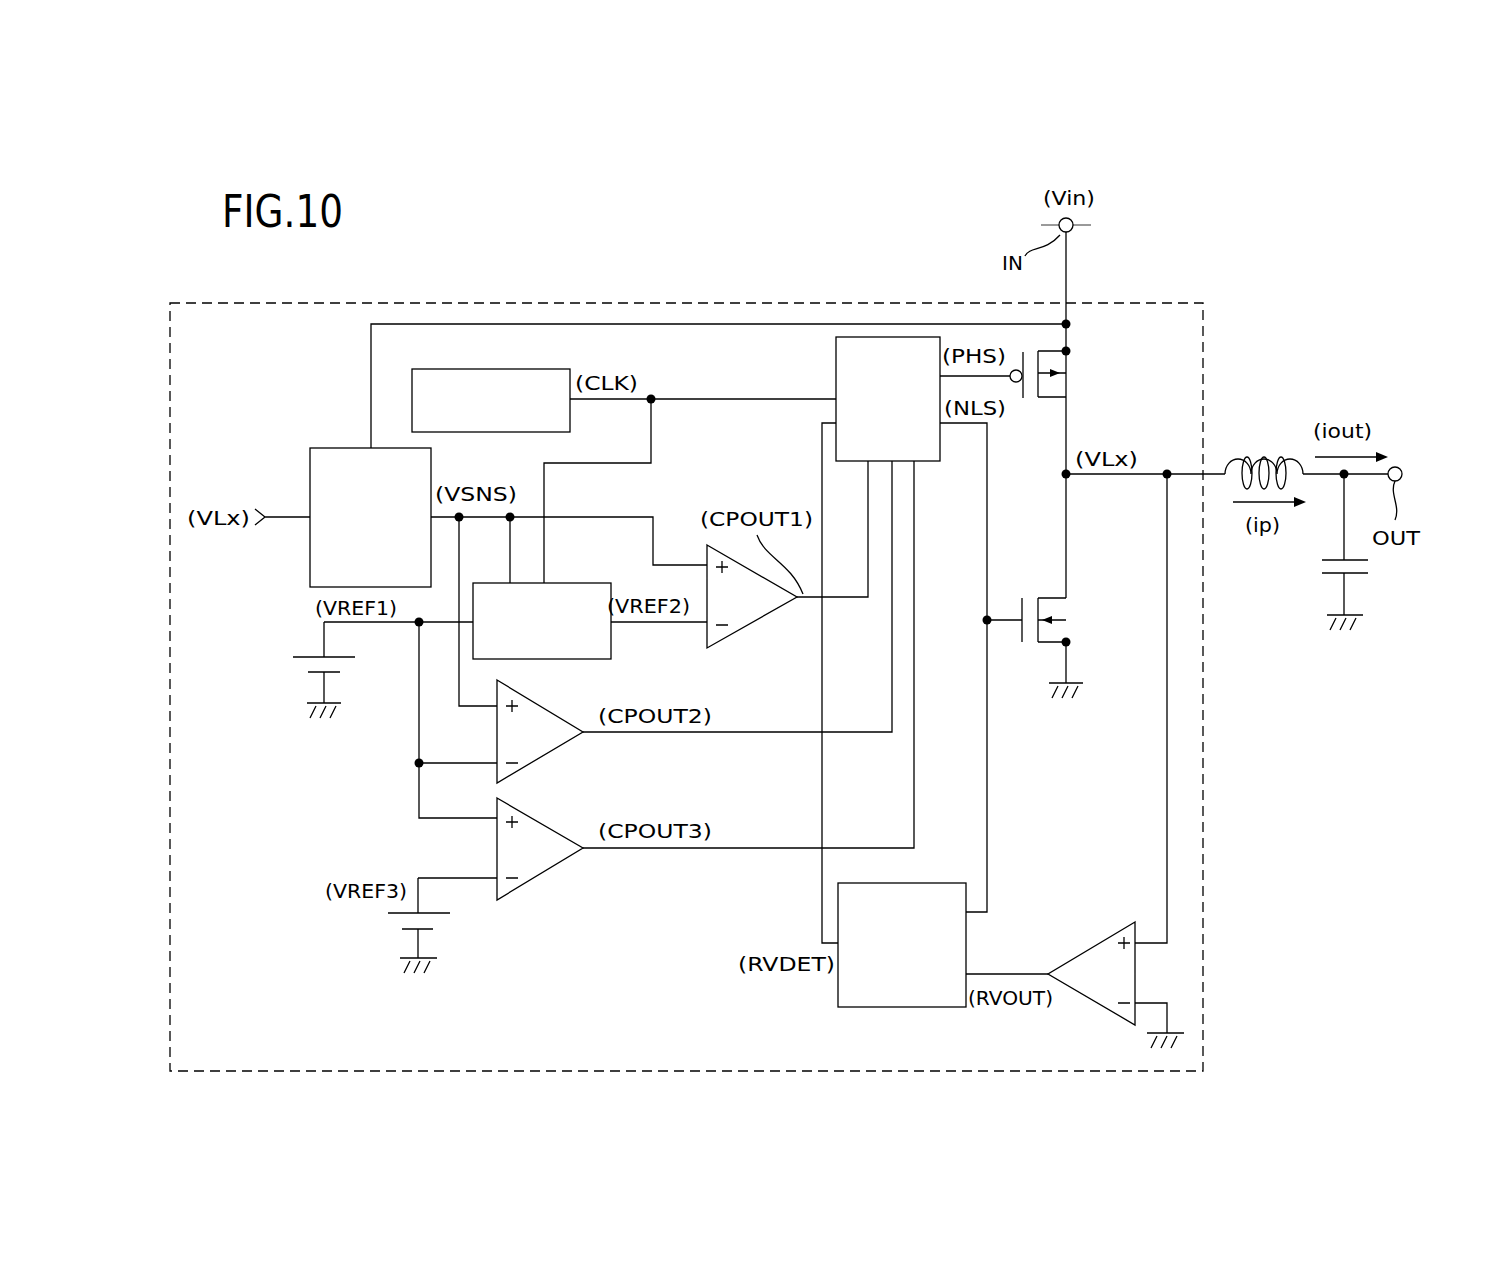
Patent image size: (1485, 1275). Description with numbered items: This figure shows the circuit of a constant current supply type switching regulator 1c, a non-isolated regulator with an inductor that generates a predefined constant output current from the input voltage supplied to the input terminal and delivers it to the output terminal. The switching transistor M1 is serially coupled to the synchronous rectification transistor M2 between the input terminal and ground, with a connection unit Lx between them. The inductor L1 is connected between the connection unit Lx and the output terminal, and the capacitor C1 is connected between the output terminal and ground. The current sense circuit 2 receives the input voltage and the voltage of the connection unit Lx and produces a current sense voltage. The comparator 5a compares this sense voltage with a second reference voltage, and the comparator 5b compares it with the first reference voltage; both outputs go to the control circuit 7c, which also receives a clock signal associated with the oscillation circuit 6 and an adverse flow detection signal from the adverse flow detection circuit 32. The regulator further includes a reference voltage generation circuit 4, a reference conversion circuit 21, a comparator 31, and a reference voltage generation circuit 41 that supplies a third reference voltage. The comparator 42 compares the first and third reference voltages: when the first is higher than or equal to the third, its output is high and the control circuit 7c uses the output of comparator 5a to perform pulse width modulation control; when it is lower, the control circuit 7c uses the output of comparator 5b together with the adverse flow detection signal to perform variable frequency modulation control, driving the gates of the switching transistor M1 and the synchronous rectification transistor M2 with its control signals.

The switching regulator 1c is at (1172, 257).
The current sense circuit 2 is at (345, 448).
The reference voltage generation circuit 4 is at (306, 664).
The comparator 5a is at (748, 632).
The comparator 5b is at (535, 703).
The oscillation circuit 6 is at (500, 369).
The control circuit 7c is at (836, 355).
The reference conversion circuit 21 is at (567, 583).
The comparator 31 is at (1108, 1003).
The adverse flow detection circuit 32 is at (900, 1007).
The reference voltage generation circuit 41 is at (402, 921).
The comparator 42 is at (535, 820).
The switching transistor M1 is at (1065, 373).
The synchronous rectification transistor M2 is at (1064, 648).
The inductor L1 is at (1264, 458).
The capacitor C1 is at (1328, 552).
The connection unit Lx is at (1072, 480).